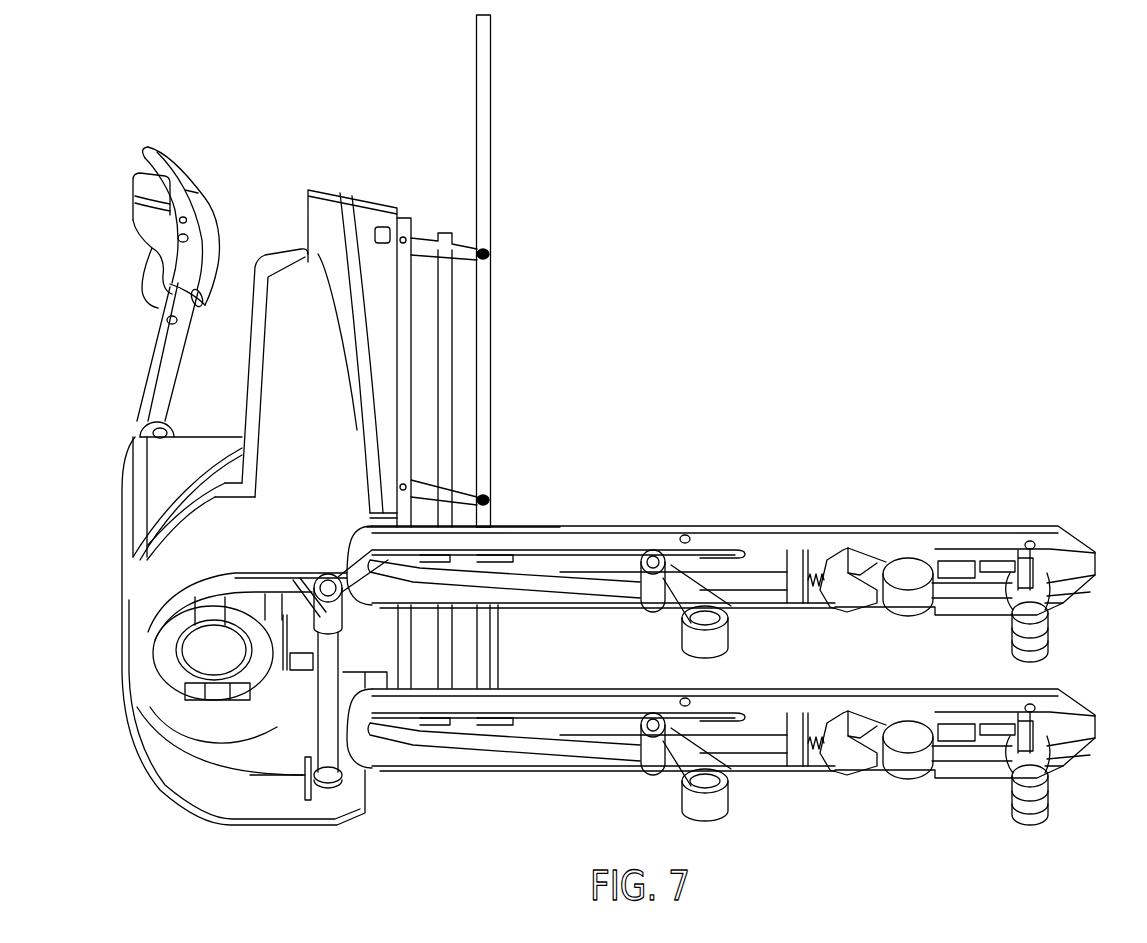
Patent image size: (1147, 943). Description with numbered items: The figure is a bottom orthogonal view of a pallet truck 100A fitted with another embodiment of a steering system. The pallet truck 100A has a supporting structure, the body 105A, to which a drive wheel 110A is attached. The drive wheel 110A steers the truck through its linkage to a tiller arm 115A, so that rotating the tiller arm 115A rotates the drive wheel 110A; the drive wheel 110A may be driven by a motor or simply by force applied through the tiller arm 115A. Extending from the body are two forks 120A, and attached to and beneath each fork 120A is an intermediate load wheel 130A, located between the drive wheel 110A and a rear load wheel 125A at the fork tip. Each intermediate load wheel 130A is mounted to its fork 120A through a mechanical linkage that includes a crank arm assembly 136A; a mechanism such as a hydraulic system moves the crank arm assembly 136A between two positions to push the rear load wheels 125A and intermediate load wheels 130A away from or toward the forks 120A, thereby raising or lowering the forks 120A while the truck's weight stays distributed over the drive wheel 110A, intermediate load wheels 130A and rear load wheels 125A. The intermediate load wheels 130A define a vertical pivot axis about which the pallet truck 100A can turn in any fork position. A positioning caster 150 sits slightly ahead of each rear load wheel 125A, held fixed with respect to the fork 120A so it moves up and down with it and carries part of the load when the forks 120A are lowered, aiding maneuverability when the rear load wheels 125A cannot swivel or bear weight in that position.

The pallet truck 100A is at (627, 189).
The body 105A is at (370, 213).
The drive wheel 110A is at (175, 711).
The tiller arm 115A is at (152, 352).
The fork 120A is at (700, 526).
The rear load wheel 125A is at (1048, 648).
The intermediate load wheel 130A is at (712, 634).
The crank arm assembly 136A is at (538, 583).
The positioning caster 150 is at (905, 605).